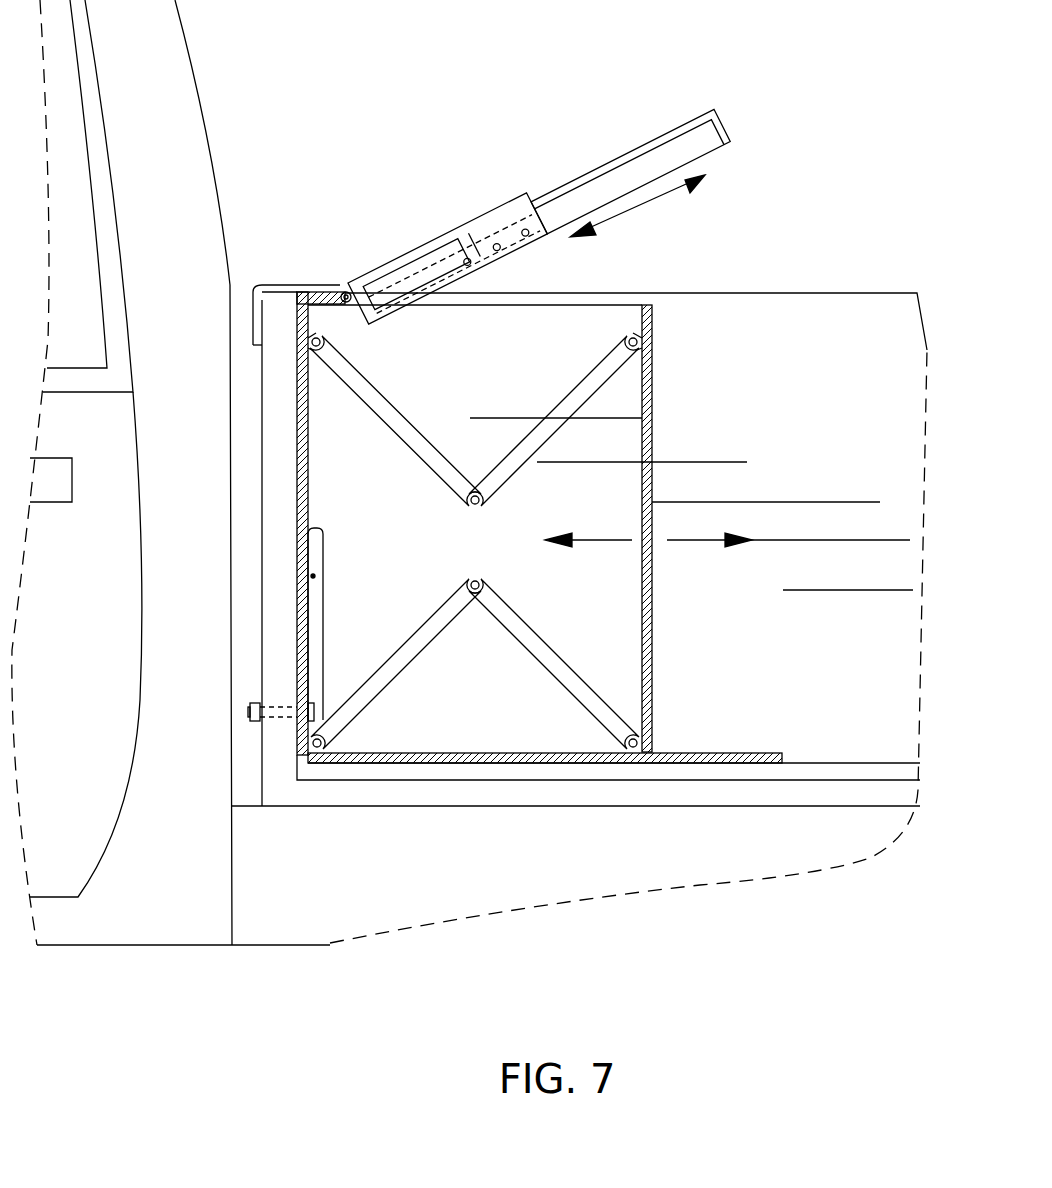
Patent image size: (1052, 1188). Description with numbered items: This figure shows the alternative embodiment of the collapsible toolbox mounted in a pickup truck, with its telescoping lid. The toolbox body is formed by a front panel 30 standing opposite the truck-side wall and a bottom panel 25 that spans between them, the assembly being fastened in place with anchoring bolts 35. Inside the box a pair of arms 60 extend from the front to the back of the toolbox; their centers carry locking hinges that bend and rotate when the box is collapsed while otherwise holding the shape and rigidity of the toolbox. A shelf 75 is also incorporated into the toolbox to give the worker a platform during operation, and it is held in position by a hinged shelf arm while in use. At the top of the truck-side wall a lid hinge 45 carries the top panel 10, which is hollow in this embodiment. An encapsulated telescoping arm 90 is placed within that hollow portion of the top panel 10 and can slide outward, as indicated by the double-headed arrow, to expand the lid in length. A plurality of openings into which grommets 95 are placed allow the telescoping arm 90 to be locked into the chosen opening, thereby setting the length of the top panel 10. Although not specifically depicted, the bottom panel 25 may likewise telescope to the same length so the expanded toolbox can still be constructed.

The top panel 10 is at (445, 228).
The bottom panel 25 is at (572, 766).
The front panel 30 is at (655, 453).
The anchoring bolts 35 is at (283, 713).
The lid hinge 45 is at (345, 290).
The arms 60 is at (578, 385).
The shelf 75 is at (330, 570).
The telescoping arm 90 is at (563, 183).
The grommets with openings 95 is at (525, 229).